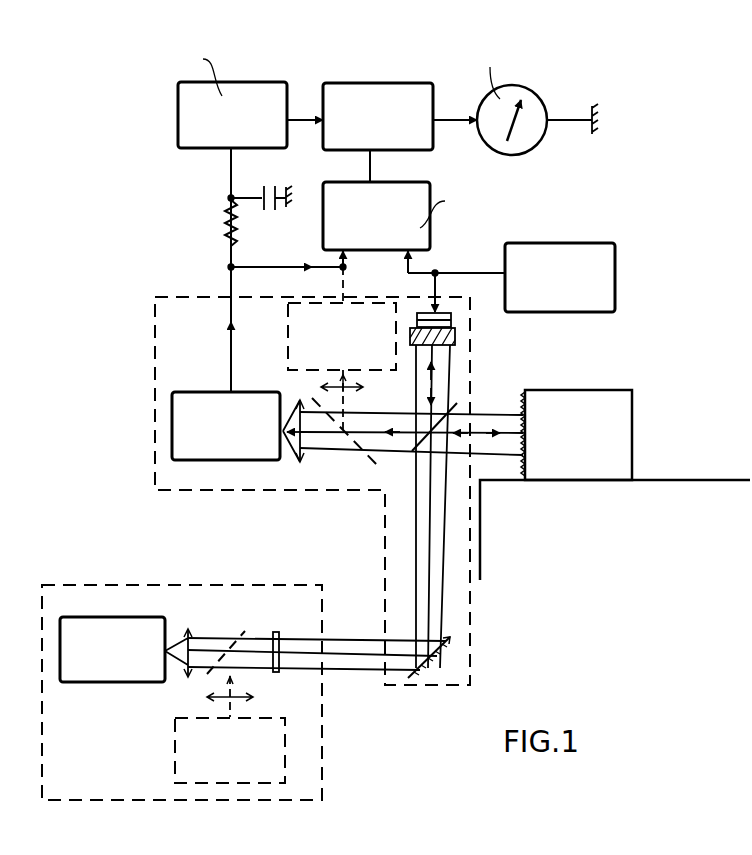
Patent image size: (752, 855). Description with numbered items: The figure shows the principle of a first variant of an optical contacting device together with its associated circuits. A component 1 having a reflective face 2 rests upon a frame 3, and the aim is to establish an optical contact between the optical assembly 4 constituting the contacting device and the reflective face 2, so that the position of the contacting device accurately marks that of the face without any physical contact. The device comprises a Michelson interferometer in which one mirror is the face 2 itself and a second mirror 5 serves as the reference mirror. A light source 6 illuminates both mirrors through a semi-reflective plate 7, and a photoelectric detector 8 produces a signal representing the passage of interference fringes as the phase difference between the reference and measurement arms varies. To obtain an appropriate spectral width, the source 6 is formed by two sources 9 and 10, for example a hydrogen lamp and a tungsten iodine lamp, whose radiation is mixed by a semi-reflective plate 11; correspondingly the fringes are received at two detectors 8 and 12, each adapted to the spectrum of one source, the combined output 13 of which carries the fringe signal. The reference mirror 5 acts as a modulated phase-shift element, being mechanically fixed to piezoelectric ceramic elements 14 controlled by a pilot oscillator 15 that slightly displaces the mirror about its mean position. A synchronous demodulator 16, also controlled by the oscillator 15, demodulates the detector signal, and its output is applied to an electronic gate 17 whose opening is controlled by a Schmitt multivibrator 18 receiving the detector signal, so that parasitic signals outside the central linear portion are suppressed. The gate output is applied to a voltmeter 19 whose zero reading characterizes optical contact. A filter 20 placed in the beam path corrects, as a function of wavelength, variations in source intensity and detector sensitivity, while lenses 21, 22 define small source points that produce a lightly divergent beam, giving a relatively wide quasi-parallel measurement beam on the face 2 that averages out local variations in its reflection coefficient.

The component 1 is at (613, 400).
The reflective face 2 is at (523, 403).
The frame 3 is at (655, 490).
The optical assembly 4 is at (154, 476).
The reference mirror 5 is at (458, 340).
The light source 6 is at (324, 768).
The semi-reflective plate 7 is at (411, 452).
The photoelectric detector 8 is at (256, 398).
The source 9 is at (148, 624).
The source 10 is at (283, 738).
The semi-reflective plate 11 is at (243, 635).
The detector 12 is at (378, 304).
The combined output 13 is at (346, 268).
The piezoelectric ceramic elements 14 is at (455, 317).
The pilot oscillator 15 is at (594, 252).
The synchronous demodulator 16 is at (414, 196).
The electronic gate 17 is at (413, 95).
The Schmitt multivibrator 18 is at (262, 92).
The voltmeter 19 is at (531, 101).
The filter 20 is at (280, 639).
The lens 21 is at (190, 640).
The lens 22 is at (246, 698).